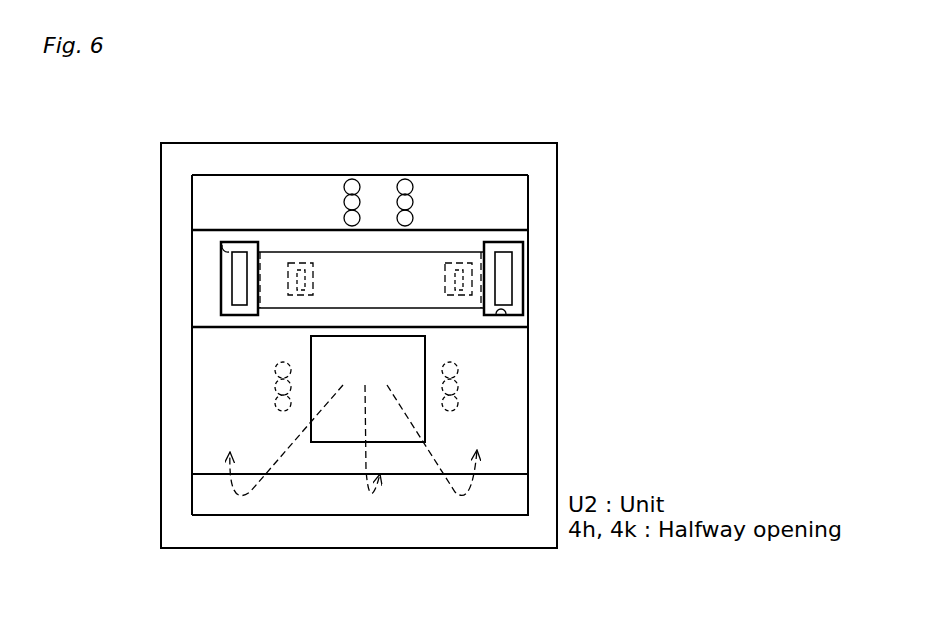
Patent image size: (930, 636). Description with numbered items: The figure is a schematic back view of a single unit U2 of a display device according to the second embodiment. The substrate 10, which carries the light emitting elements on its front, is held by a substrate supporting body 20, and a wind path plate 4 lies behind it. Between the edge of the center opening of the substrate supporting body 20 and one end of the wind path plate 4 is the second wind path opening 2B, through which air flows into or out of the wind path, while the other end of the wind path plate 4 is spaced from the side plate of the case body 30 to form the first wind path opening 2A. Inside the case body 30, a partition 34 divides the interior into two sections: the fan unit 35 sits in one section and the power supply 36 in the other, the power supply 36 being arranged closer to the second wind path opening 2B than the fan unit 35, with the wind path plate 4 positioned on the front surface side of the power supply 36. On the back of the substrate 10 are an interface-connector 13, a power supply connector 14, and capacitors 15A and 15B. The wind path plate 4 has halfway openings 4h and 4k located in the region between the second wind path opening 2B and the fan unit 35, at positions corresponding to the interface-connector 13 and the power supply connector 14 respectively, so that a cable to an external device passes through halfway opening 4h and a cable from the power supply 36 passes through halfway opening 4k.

The substrate supporting body 20 is at (558, 165).
The wind path plate 4 is at (505, 407).
The second wind path opening 2B is at (449, 186).
The wind path opening 2A is at (412, 497).
The substrate 10 is at (290, 185).
The case body 30 is at (192, 397).
The partition 34 is at (290, 327).
The fan unit 35 is at (311, 420).
The power supply 36 is at (280, 308).
The interface-connector 13 is at (232, 278).
The power supply connector 14 is at (292, 263).
The halfway opening 4h is at (221, 248).
The halfway opening 4k is at (297, 263).
The capacitor 15A is at (405, 179).
The capacitor 15B is at (272, 372).
The unit U2 is at (103, 208).